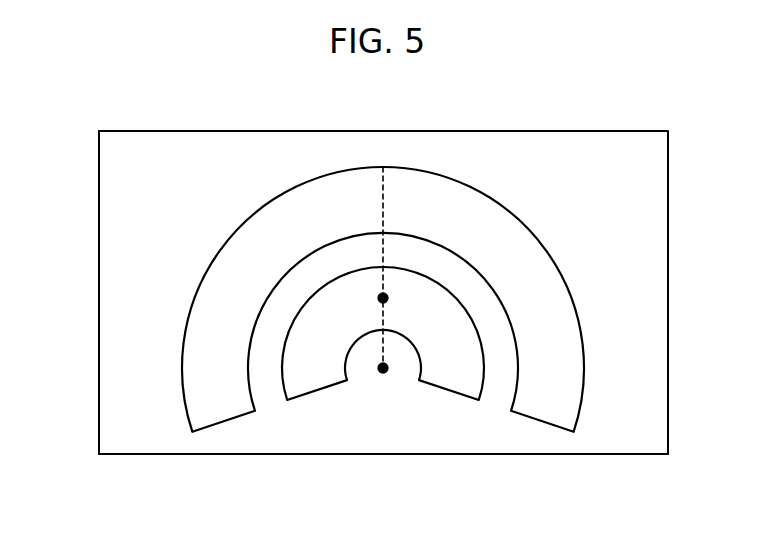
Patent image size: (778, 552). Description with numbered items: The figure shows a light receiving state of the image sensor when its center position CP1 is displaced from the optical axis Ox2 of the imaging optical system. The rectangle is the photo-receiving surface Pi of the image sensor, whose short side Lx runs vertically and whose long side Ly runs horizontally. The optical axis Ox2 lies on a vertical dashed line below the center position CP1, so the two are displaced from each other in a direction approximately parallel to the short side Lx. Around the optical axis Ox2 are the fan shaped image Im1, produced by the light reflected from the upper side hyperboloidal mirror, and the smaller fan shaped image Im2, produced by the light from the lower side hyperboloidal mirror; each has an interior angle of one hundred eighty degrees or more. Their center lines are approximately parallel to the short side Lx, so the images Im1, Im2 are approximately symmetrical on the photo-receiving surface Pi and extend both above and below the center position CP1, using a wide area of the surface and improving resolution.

The photo-receiving surface Pi is at (668, 192).
The short side Lx is at (98, 225).
The vertical length of image region Ly is at (217, 455).
The fan shaped image Im1 is at (243, 222).
The fan shaped image Im2 is at (313, 383).
The center position CP1 is at (388, 297).
The optical axis Ox2 is at (385, 372).